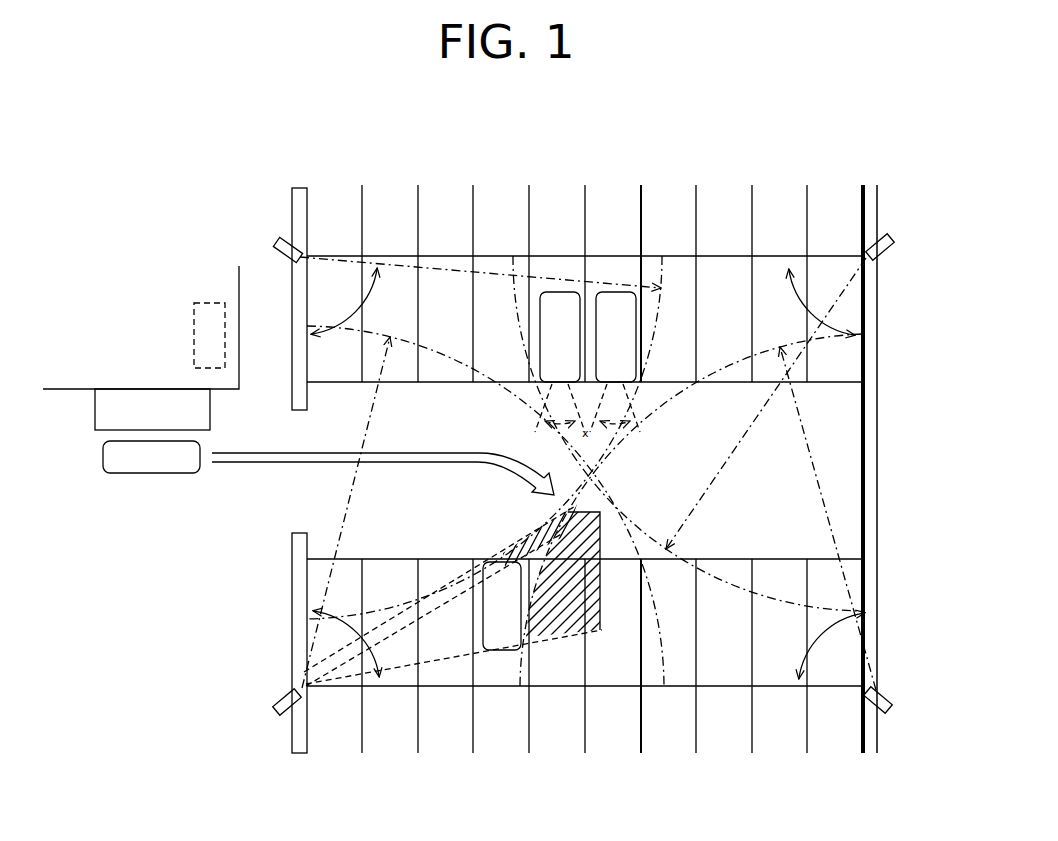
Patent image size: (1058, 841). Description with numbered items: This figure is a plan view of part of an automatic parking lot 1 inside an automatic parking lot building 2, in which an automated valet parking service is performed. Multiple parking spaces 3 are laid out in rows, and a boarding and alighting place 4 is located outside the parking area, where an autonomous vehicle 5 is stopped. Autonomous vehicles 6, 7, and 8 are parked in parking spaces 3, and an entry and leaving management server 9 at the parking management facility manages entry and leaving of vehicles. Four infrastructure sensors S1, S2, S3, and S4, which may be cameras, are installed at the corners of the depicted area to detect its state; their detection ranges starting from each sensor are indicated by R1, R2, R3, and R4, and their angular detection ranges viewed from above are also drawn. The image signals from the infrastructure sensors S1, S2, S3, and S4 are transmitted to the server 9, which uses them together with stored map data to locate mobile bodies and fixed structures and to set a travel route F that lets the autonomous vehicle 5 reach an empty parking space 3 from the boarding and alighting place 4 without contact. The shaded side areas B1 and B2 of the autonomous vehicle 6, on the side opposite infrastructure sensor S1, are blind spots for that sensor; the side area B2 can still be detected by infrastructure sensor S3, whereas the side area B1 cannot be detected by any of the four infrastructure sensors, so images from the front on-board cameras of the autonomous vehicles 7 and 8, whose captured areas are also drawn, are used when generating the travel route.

The parking lot 1 is at (648, 195).
The automatic parking lot building 2 is at (882, 198).
The parking spaces 3 is at (400, 298).
The boarding and alighting place 4 is at (150, 408).
The autonomous vehicle 5 is at (150, 462).
The autonomous vehicle 6 is at (500, 635).
The autonomous vehicle 7 is at (558, 305).
The autonomous vehicle 8 is at (612, 305).
The entry and leaving management server 9 is at (210, 302).
The travel route F is at (262, 465).
The side area (blind spot area) B1 is at (528, 550).
The side area B2 is at (565, 632).
The infrastructure sensor S1 is at (278, 706).
The infrastructure sensor S2 is at (280, 238).
The infrastructure sensor S3 is at (897, 700).
The infrastructure sensor S4 is at (897, 254).
The detection range R1 is at (483, 507).
The detection range R2 is at (481, 437).
The detection range R3 is at (698, 512).
The detection range R4 is at (689, 433).